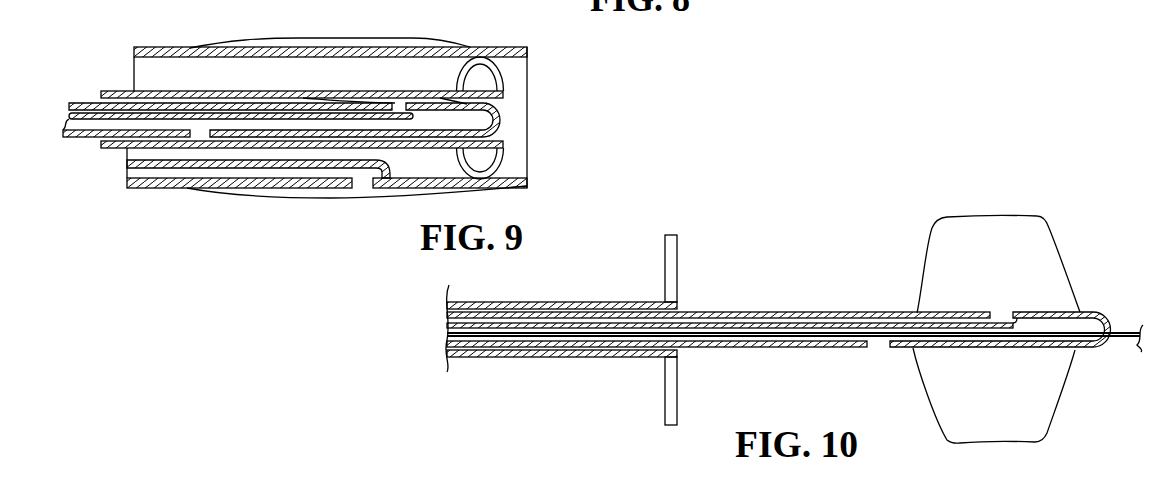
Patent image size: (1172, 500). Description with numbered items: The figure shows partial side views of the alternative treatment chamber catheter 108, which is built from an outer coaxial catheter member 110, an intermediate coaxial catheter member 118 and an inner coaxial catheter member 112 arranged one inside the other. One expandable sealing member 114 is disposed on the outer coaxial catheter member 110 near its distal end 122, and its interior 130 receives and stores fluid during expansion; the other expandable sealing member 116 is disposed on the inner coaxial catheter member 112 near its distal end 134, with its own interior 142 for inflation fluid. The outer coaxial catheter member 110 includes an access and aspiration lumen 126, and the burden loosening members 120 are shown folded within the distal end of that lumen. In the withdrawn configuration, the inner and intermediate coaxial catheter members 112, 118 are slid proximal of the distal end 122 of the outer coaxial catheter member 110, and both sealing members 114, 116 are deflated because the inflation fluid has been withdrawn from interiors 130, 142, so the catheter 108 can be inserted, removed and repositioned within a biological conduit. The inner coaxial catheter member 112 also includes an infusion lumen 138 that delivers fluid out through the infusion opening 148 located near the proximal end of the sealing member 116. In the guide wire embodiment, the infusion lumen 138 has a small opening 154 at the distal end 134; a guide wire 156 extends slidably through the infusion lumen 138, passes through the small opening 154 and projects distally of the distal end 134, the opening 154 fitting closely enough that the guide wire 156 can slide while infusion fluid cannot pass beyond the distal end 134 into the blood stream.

In FIG. 9, the treatment chamber catheter 108 is at (322, 217).
In FIG. 9, the outer coaxial catheter member 110 is at (491, 53).
In FIG. 9, the inner coaxial catheter member 112 is at (503, 100).
In FIG. 10, the inner coaxial catheter member 112 is at (832, 312).
In FIG. 9, the expandable sealing member 114 is at (312, 38).
In FIG. 9, the expandable sealing member 116 is at (301, 78).
In FIG. 10, the expandable sealing member 116 is at (1001, 215).
In FIG. 9, the intermediate coaxial catheter member 118 is at (190, 91).
In FIG. 10, the intermediate coaxial catheter member 118 is at (583, 302).
In FIG. 9, the burden loosening members 120 is at (503, 83).
In FIG. 10, the burden loosening members 120 is at (672, 268).
In FIG. 9, the distal end 122 is at (527, 52).
In FIG. 9, the access and aspiration lumen 126 is at (521, 80).
In FIG. 9, the interior 130 is at (247, 43).
In FIG. 10, the distal end 134 is at (1090, 313).
In FIG. 10, the infusion lumen 138 is at (763, 348).
In FIG. 9, the interior 142 is at (363, 91).
In FIG. 10, the infusion opening 148 is at (880, 350).
In FIG. 10, the small opening 154 is at (1121, 312).
In FIG. 10, the guide wire 156 is at (1117, 338).